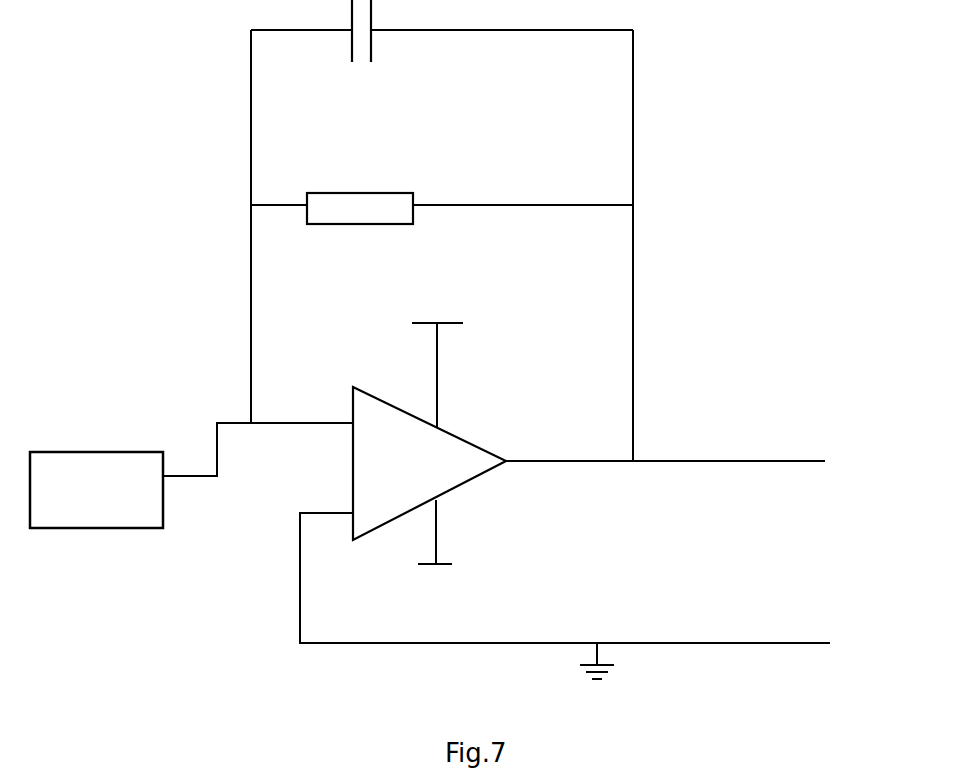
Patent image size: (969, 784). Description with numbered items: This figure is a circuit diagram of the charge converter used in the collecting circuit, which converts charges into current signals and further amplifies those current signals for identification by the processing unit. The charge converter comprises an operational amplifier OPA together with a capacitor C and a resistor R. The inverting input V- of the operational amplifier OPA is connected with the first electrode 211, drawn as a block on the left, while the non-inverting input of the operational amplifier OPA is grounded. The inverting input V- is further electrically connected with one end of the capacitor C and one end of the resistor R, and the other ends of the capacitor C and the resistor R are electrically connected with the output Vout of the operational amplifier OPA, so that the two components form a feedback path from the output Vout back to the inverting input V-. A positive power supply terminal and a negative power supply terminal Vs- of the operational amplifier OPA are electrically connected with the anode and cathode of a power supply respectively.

The first electrode 211 is at (96, 490).
The capacitor C is at (442, 46).
The resistor R is at (442, 240).
The operational amplifier OPA is at (443, 463).
The negative power supply terminal Vs- is at (436, 555).
The inverting input V- is at (258, 428).
The output Vout is at (698, 452).